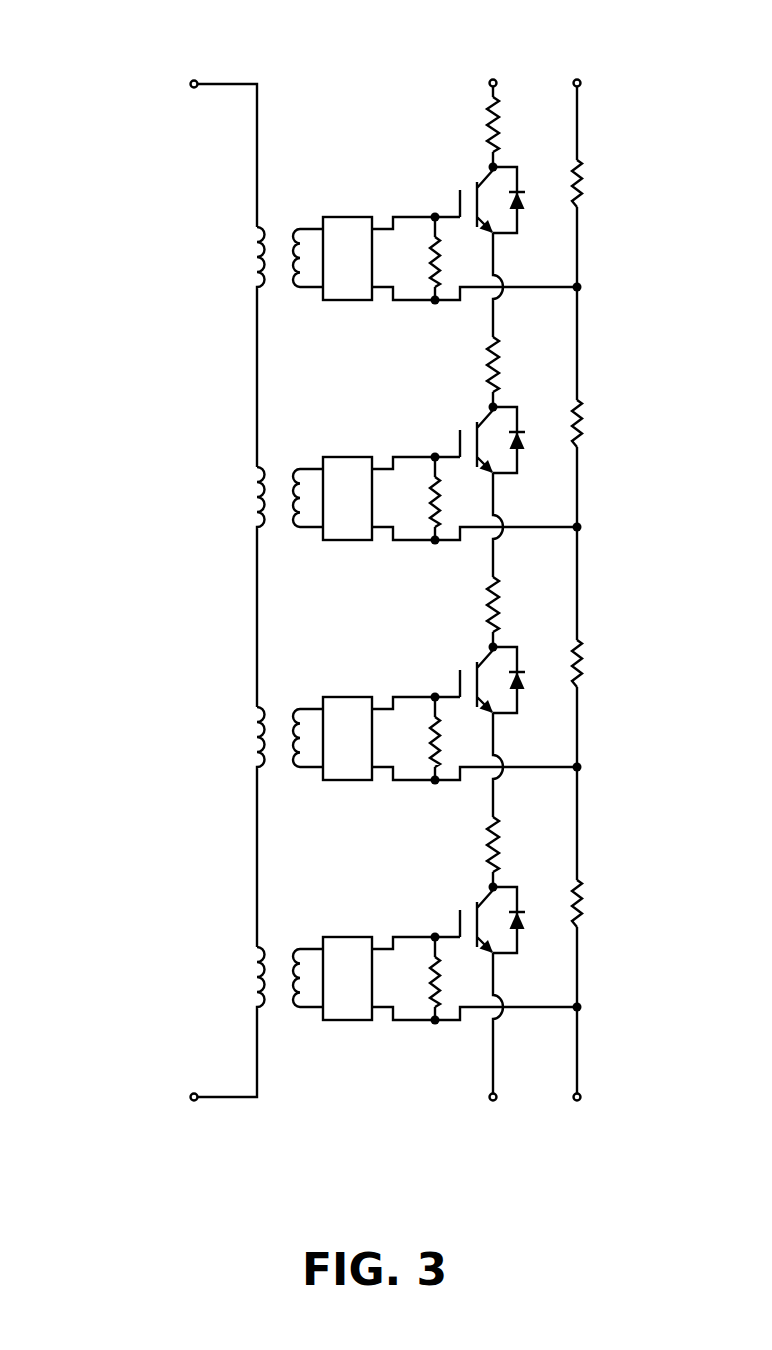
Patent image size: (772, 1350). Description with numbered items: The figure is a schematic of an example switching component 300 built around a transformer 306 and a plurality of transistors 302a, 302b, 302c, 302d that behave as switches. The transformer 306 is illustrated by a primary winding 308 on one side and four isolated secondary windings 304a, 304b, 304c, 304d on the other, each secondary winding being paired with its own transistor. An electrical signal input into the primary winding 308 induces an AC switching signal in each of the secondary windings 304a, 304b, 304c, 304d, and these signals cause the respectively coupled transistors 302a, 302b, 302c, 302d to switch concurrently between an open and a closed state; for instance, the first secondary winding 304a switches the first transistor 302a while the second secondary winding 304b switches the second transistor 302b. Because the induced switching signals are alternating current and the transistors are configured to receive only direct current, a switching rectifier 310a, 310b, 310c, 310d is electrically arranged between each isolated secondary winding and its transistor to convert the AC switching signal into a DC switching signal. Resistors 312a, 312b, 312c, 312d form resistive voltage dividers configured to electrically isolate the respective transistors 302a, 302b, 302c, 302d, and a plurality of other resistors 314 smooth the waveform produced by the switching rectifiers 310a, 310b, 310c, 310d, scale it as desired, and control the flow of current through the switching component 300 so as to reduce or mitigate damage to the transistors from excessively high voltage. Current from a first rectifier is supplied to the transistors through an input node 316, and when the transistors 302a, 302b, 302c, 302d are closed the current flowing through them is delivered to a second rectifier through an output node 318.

The switching component 300 is at (123, 45).
The first transistor 302a is at (456, 919).
The second transistor 302b is at (456, 679).
The transistor 302c is at (456, 439).
The transistor 302d is at (477, 185).
The first secondary winding 304a is at (344, 1006).
The second secondary winding 304b is at (344, 766).
The secondary winding 304c is at (343, 526).
The secondary winding 304d is at (298, 289).
The transformer 306 is at (284, 94).
The primary winding 308 is at (257, 180).
The switching rectifier 310a is at (319, 965).
The switching rectifier 310b is at (319, 725).
The switching rectifier 310c is at (319, 485).
The switching rectifier 310d is at (352, 216).
The resistor 312a is at (447, 843).
The resistor 312b is at (447, 603).
The resistor 312c is at (447, 363).
The resistor 312d is at (490, 120).
The resistor 314 is at (435, 245).
The input node 316 is at (487, 1093).
The output node 318 is at (486, 78).